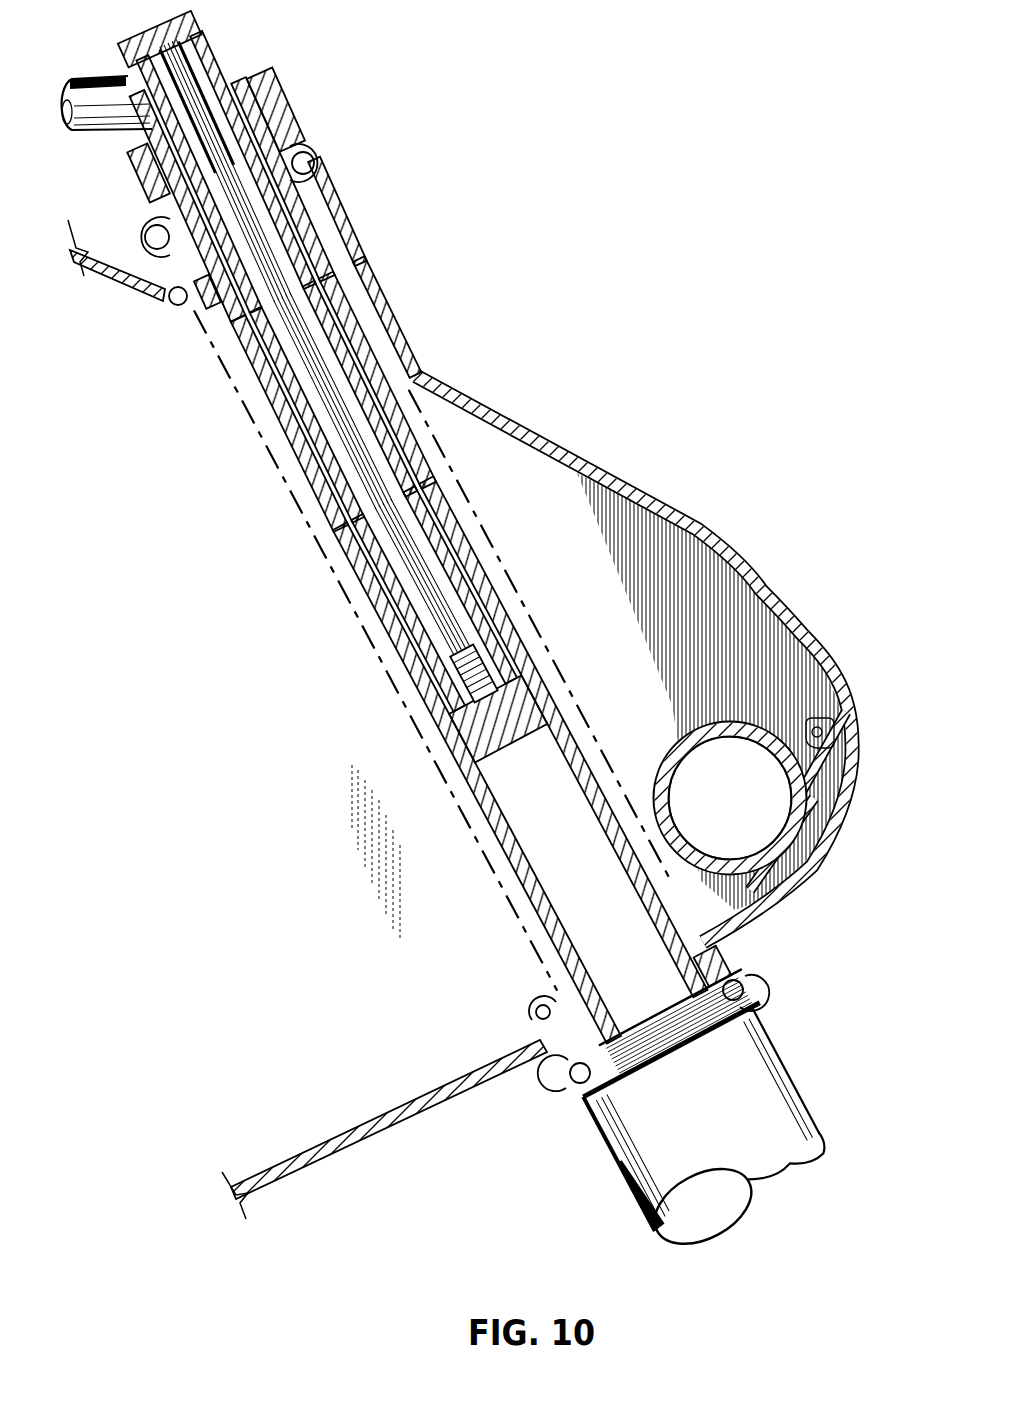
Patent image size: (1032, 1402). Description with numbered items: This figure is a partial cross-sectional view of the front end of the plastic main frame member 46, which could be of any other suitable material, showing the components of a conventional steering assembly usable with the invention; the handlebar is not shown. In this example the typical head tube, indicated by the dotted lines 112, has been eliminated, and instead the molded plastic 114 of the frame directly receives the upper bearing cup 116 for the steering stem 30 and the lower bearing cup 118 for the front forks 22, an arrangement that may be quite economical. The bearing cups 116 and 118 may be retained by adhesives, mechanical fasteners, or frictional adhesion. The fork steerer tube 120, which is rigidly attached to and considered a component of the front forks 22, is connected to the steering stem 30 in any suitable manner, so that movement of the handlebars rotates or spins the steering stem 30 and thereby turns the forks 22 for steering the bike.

The steering stem 30 is at (65, 80).
The molded plastic 114 is at (330, 187).
The upper bearing cup 116 is at (347, 230).
The head tube 112 is at (460, 480).
The main frame member 46 is at (633, 487).
The fork steerer tube 120 is at (540, 927).
The lower bearing cup 118 is at (747, 973).
The front forks 22 is at (800, 1090).